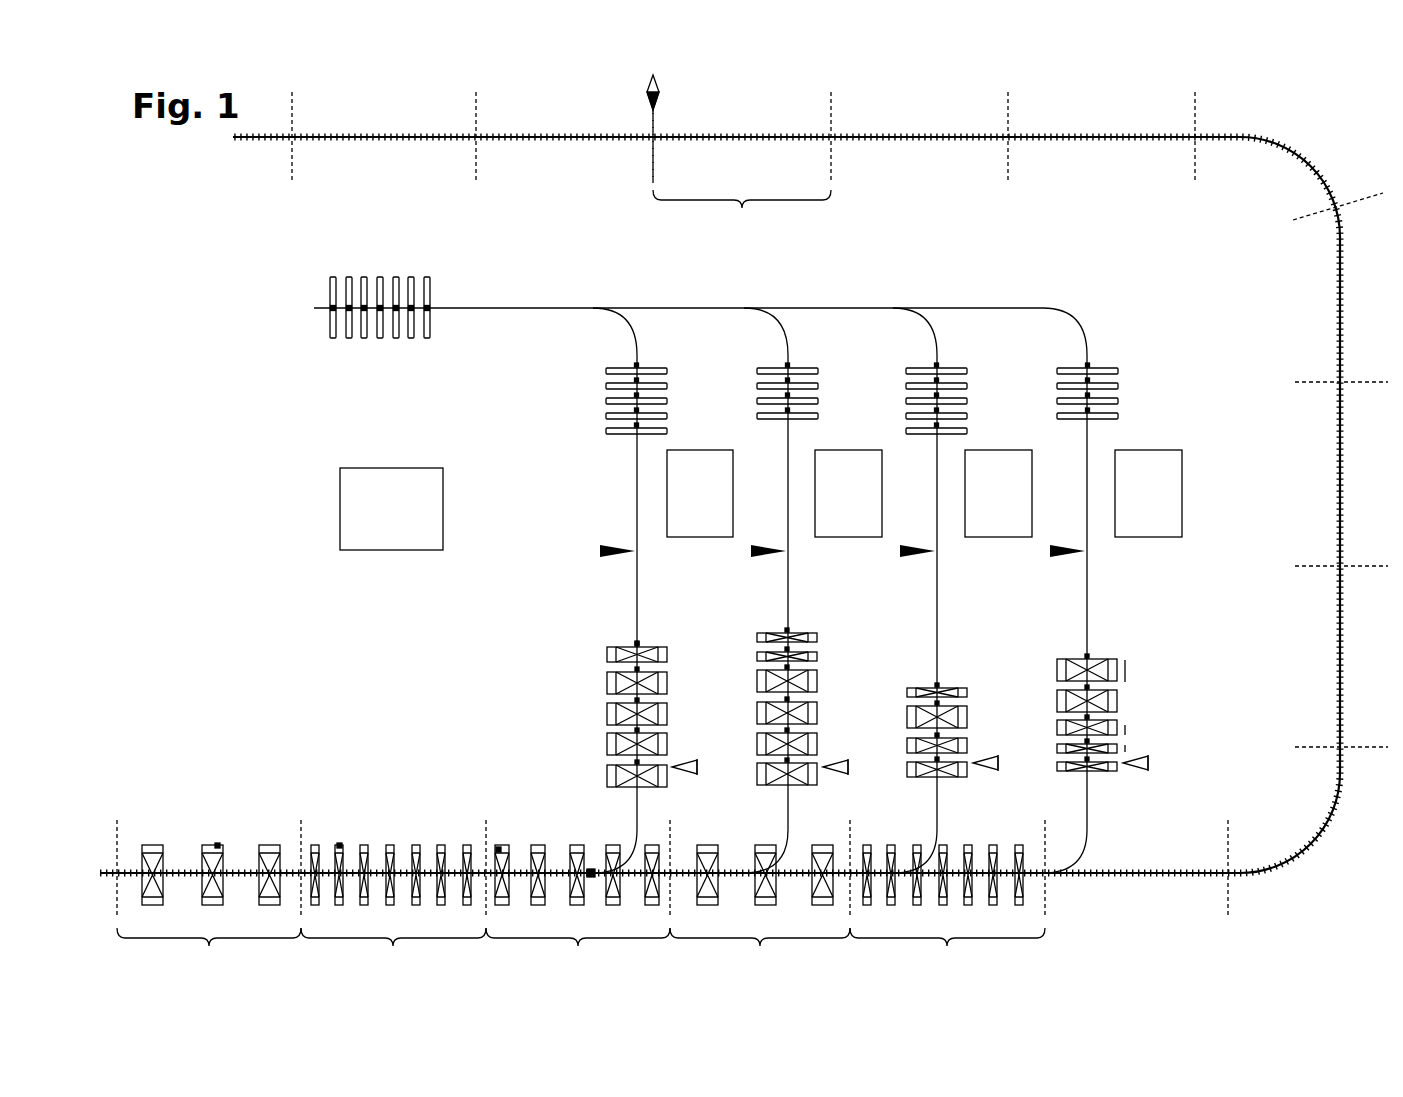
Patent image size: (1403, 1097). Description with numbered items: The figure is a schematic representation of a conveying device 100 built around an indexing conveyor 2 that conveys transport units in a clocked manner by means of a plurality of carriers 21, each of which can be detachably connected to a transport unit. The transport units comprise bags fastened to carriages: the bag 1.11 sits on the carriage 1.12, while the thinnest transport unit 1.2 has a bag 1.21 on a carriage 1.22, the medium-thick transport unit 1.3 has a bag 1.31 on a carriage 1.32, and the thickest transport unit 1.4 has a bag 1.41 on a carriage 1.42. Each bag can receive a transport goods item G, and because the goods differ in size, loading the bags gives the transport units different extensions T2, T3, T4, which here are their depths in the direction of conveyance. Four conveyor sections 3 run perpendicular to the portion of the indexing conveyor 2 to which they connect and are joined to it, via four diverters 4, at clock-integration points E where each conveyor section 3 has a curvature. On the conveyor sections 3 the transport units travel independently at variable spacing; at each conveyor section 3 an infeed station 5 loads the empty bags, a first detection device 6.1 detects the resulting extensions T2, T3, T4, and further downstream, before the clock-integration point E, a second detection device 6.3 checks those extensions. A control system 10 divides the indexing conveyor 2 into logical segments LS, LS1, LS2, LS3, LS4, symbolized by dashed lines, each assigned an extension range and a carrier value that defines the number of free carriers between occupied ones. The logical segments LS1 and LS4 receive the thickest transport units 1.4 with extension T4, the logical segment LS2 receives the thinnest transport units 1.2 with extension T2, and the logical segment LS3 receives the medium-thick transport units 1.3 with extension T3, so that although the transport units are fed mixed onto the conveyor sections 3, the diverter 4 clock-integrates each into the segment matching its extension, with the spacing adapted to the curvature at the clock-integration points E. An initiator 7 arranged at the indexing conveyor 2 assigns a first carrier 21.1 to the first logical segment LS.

The conveying device 100 is at (1292, 106).
The indexing conveyor 2 is at (1078, 96).
The carriers 21 is at (1343, 475).
The first carrier 21.1 is at (655, 140).
The initiator 7 is at (661, 86).
The logical segment LS is at (742, 217).
The bag 1.11 is at (333, 280).
The carriage 1.12 is at (320, 305).
The control system 10 is at (391, 509).
The infeed station 5 is at (1148, 490).
The first detection device 6.1 is at (606, 545).
The conveyor section 3 is at (598, 604).
The transport goods item G is at (615, 683).
The carriage 1.32 is at (640, 645).
The carriage 1.22 is at (788, 632).
The carriage 1.42 is at (1090, 655).
The extension T4 is at (1127, 671).
The extension T3 is at (1127, 730).
The extension T2 is at (1127, 748).
The second detection device 6.3 is at (683, 765).
The transport unit 1.4 is at (158, 840).
The bag 1.41 is at (218, 845).
The transport unit 1.2 is at (394, 840).
The bag 1.21 is at (339, 845).
The transport unit 1.3 is at (542, 837).
The bag 1.31 is at (499, 848).
The diverter 4 is at (591, 858).
The clock-integration point E is at (595, 887).
The logical segment LS1 is at (209, 955).
The logical segment LS2 is at (673, 955).
The logical segment LS3 is at (578, 955).
The logical segment LS4 is at (760, 955).